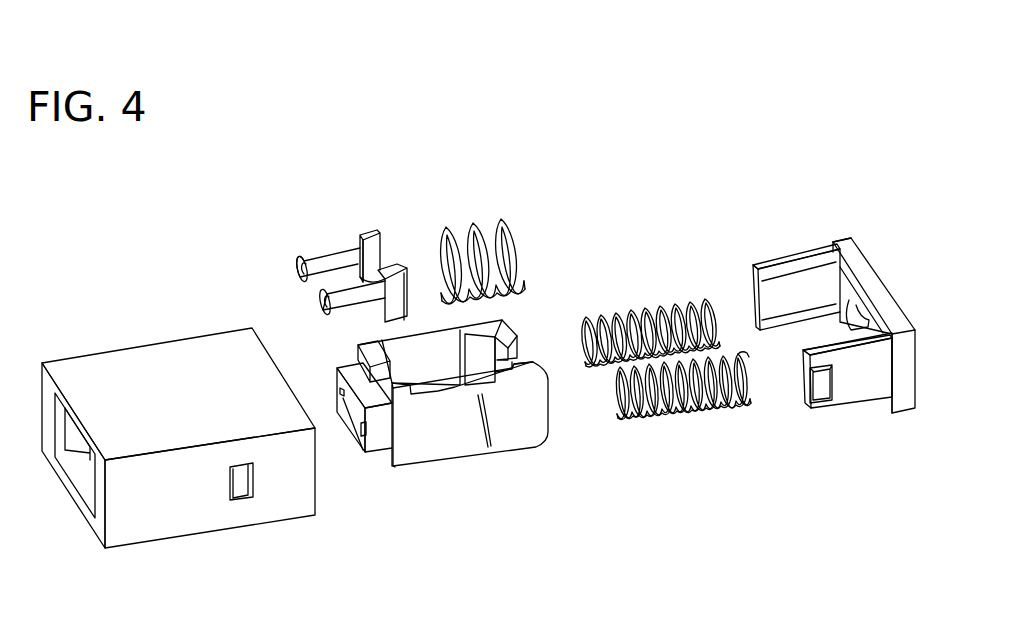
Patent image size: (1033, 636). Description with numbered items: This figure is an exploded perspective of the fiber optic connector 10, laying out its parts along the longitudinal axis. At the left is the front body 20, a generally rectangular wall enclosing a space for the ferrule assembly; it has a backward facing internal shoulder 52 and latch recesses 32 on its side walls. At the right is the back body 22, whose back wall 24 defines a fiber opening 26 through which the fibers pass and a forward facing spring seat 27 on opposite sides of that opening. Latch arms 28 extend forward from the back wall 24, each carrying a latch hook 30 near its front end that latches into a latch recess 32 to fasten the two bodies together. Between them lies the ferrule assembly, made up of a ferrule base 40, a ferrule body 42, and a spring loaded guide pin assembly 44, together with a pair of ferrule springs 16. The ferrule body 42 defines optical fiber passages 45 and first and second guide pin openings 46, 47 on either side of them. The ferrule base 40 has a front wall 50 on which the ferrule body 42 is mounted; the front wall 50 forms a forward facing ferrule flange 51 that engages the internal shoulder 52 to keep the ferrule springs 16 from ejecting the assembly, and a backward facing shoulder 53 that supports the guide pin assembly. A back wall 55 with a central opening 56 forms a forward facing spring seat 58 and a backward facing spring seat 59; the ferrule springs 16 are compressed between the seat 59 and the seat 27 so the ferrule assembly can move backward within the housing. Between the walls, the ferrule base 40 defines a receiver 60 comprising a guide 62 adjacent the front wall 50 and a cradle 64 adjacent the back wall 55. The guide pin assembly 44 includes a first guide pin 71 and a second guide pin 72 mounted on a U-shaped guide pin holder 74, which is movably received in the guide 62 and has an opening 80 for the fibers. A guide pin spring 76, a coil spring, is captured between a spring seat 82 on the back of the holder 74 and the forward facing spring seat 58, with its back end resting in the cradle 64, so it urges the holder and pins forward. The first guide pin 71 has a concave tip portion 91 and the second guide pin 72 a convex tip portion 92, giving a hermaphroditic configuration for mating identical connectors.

The fiber optic connector 10 is at (654, 521).
The ferrule spring 16 is at (648, 315).
The front body 20 is at (170, 467).
The back body 22 is at (845, 303).
The back wall 24 is at (846, 238).
The fiber opening 26 is at (857, 315).
The forward facing spring seat 27 is at (842, 290).
The latch arm 28 is at (824, 342).
The latch hook 30 is at (820, 392).
The latch recess 32 is at (243, 500).
The ferrule base 40 is at (447, 420).
The ferrule body 42 is at (347, 441).
The spring loaded guide pin assembly 44 is at (546, 240).
The optical fiber passages 45 is at (353, 410).
The first guide pin opening 46 is at (340, 390).
The second guide pin opening 47 is at (363, 428).
The front wall 50 is at (382, 372).
The ferrule flange 51 is at (390, 461).
The internal shoulder 52 is at (72, 437).
The backward facing shoulder 53 is at (432, 388).
The back wall 55 is at (508, 348).
The central opening 56 is at (506, 364).
The forward facing spring seat 58 is at (495, 343).
The backward facing spring seat 59 is at (538, 377).
The receiver 60 is at (480, 377).
The guide 62 is at (420, 368).
The cradle 64 is at (475, 362).
The first guide pin 71 is at (320, 260).
The second guide pin 72 is at (340, 315).
The guide pin holder 74 is at (360, 235).
The guide pin spring 76 is at (483, 223).
The opening 80 is at (373, 260).
The spring seat 82 is at (402, 267).
The concave tip portion 91 is at (298, 275).
The convex tip portion 92 is at (320, 305).